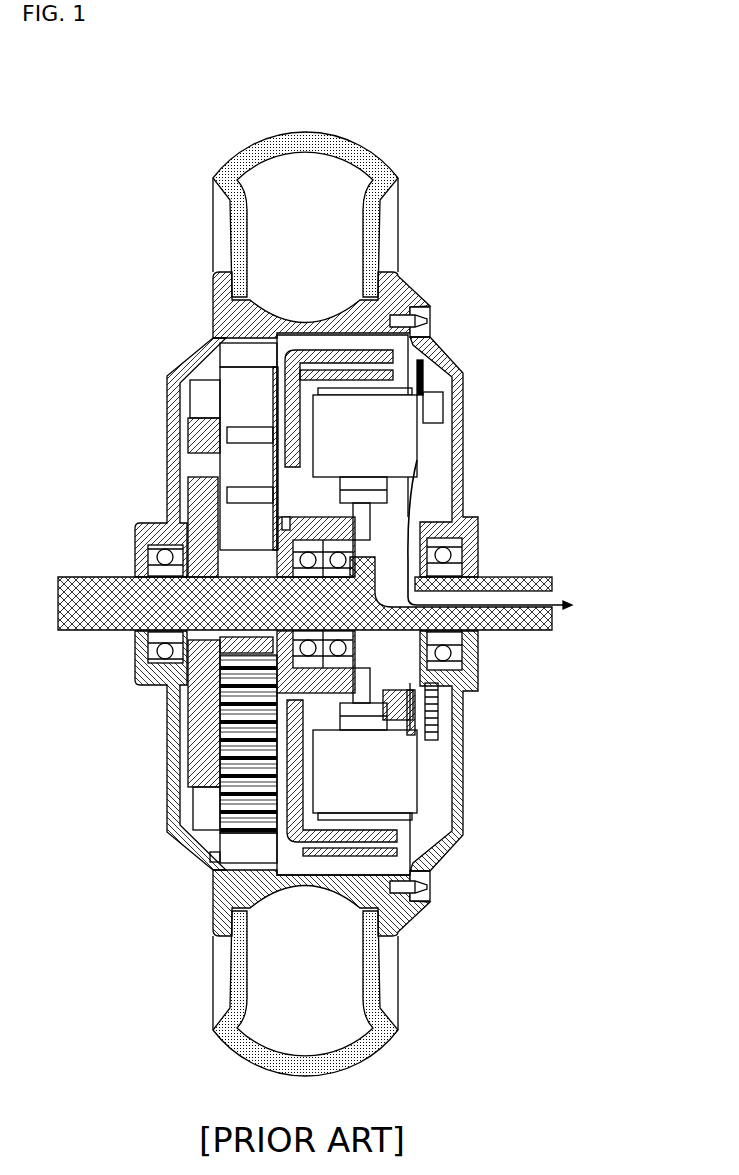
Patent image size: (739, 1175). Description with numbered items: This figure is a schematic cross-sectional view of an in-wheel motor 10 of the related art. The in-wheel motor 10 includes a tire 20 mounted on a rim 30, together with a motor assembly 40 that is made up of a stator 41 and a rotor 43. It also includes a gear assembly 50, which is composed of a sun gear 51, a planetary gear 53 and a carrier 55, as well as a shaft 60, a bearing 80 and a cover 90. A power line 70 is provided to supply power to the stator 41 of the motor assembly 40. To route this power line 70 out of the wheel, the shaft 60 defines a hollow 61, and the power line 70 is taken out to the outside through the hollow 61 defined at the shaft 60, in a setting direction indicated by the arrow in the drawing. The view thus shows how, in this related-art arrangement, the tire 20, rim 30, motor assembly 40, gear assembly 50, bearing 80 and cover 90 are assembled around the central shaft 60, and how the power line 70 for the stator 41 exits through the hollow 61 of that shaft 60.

The in-wheel motor 10 is at (209, 128).
The tire 20 is at (399, 231).
The rim 30 is at (427, 323).
The motor assembly 40 is at (538, 367).
The stator 41 is at (385, 438).
The rotor 43 is at (315, 376).
The gear assembly 50 is at (74, 718).
The sun gear 51 is at (237, 648).
The planetary gear 53 is at (220, 752).
The carrier 55 is at (200, 738).
The shaft 60 is at (530, 633).
The hollow 61 is at (550, 618).
The power line 70 is at (492, 604).
The bearing 80 is at (446, 556).
The cover 90 is at (461, 793).